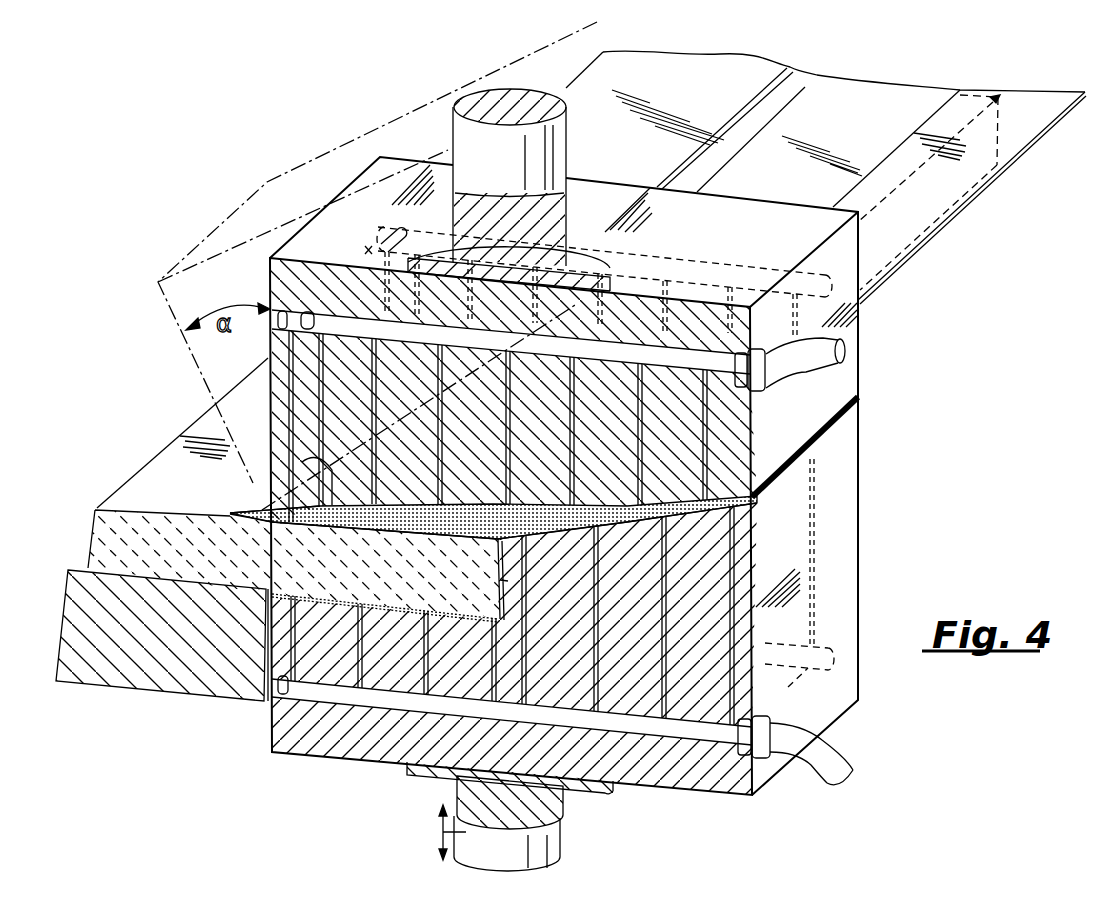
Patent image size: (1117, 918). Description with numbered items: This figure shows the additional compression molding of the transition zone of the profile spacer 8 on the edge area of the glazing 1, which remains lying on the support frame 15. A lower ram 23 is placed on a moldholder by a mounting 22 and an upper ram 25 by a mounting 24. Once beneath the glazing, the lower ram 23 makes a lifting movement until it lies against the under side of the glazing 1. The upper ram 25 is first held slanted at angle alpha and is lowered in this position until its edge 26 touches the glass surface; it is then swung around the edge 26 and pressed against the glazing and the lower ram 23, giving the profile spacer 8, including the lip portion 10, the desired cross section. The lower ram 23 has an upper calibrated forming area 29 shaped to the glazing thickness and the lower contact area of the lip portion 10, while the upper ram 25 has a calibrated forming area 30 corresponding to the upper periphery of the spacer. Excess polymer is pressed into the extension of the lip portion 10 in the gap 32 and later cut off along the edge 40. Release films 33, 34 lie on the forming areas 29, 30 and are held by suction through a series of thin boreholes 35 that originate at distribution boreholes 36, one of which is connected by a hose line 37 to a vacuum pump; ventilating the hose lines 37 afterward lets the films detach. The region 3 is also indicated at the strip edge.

The glazing 1 is at (720, 70).
The strip edge region 3 is at (1003, 130).
The profile spacer 8 is at (434, 540).
The lip portion 10 is at (555, 534).
The support frame 15 is at (172, 680).
The mounting 22 is at (552, 844).
The lower ram 23 is at (868, 572).
The mounting 24 is at (455, 143).
The upper ram 25 is at (866, 322).
The edge 26 is at (272, 516).
The forming area 29 is at (627, 524).
The forming area 30 is at (536, 501).
The gap 32 is at (690, 513).
The release film 33 is at (472, 622).
The release film 34 is at (463, 520).
The thin boreholes 35 is at (440, 384).
The distribution boreholes 36 is at (368, 250).
The hose line 37 is at (821, 362).
The edge 40 is at (955, 213).